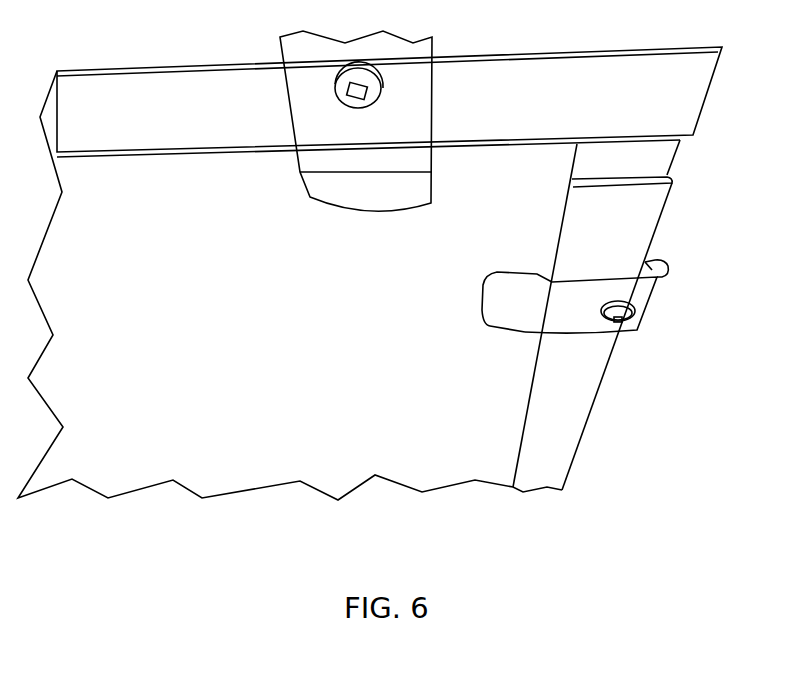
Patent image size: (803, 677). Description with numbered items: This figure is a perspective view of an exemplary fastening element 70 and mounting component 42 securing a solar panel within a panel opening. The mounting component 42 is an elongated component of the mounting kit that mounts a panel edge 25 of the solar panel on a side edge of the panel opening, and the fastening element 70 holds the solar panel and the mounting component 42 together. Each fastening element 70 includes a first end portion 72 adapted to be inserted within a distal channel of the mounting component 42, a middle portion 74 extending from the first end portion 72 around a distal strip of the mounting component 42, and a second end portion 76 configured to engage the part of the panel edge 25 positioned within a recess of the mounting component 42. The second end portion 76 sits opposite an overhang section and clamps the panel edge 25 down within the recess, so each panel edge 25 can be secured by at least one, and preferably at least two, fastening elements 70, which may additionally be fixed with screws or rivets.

The panel edge 25 is at (442, 163).
The mounting component 42 is at (540, 447).
The fastening element 70 is at (403, 112).
The first end portion 72 is at (657, 262).
The middle portion 74 is at (640, 300).
The second end portion 76 is at (520, 303).